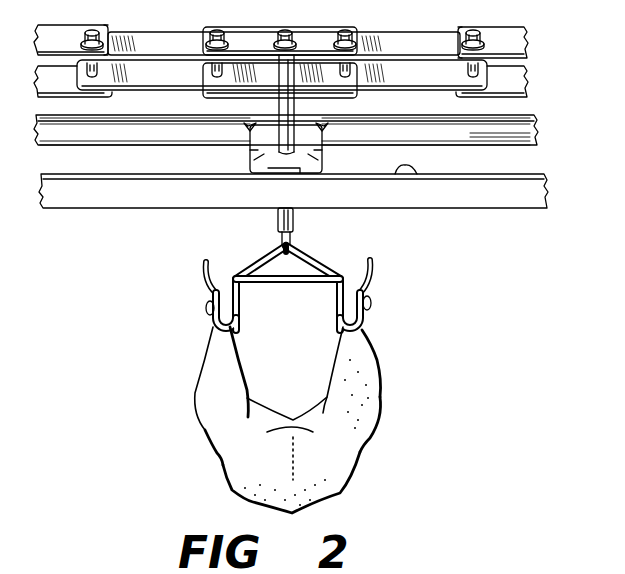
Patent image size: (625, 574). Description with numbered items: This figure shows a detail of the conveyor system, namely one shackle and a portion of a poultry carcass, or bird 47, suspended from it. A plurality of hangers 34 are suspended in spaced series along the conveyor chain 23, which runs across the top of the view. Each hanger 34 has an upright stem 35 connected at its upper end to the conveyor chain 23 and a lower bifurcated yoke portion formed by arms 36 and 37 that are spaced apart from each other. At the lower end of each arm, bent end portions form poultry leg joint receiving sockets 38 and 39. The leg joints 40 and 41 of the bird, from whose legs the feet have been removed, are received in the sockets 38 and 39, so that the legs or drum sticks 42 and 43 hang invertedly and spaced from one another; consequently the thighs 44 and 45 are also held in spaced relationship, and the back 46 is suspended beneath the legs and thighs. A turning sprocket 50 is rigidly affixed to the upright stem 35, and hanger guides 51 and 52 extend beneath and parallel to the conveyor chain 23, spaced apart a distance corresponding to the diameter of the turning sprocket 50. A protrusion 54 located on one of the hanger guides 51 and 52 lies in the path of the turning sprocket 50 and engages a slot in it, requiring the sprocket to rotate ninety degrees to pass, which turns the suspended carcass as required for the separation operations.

The conveyor chain 23 is at (413, 43).
The hanger guide 51 is at (520, 124).
The protrusion 54 is at (410, 160).
The turning sprocket 50 is at (288, 162).
The hanger guide 52 is at (498, 200).
The upright stem 35 is at (294, 218).
The hanger 34 is at (295, 283).
The arm 37 is at (240, 291).
The arm 36 is at (338, 292).
The poultry leg joint receiving socket 39 is at (205, 283).
The poultry leg joint receiving socket 38 is at (370, 283).
The leg joint 41 is at (206, 308).
The leg joint 40 is at (372, 304).
The leg 43 is at (205, 372).
The leg 42 is at (370, 373).
The thigh 45 is at (205, 443).
The thigh 44 is at (366, 431).
The bird 47 is at (286, 426).
The back 46 is at (280, 505).